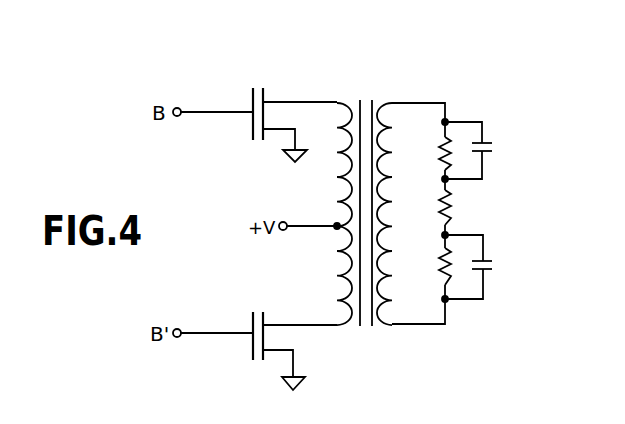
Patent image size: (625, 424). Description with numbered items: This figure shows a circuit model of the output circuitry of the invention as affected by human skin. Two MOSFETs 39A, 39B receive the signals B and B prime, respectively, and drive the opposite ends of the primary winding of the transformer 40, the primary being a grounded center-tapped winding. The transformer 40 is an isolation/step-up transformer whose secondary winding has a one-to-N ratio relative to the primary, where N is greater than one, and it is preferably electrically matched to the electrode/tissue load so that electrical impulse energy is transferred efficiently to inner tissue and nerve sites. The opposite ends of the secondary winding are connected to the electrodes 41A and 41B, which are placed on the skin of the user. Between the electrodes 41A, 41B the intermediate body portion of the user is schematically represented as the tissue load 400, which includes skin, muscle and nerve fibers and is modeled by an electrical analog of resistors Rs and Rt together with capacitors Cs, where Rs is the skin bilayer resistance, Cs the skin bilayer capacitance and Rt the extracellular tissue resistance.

The MOSFET 39A is at (252, 98).
The MOSFET 39B is at (252, 323).
The isolation/step-up transformer 40 is at (393, 66).
The electrode 41A is at (458, 120).
The electrode 41B is at (470, 302).
The tissue load 400 is at (474, 211).